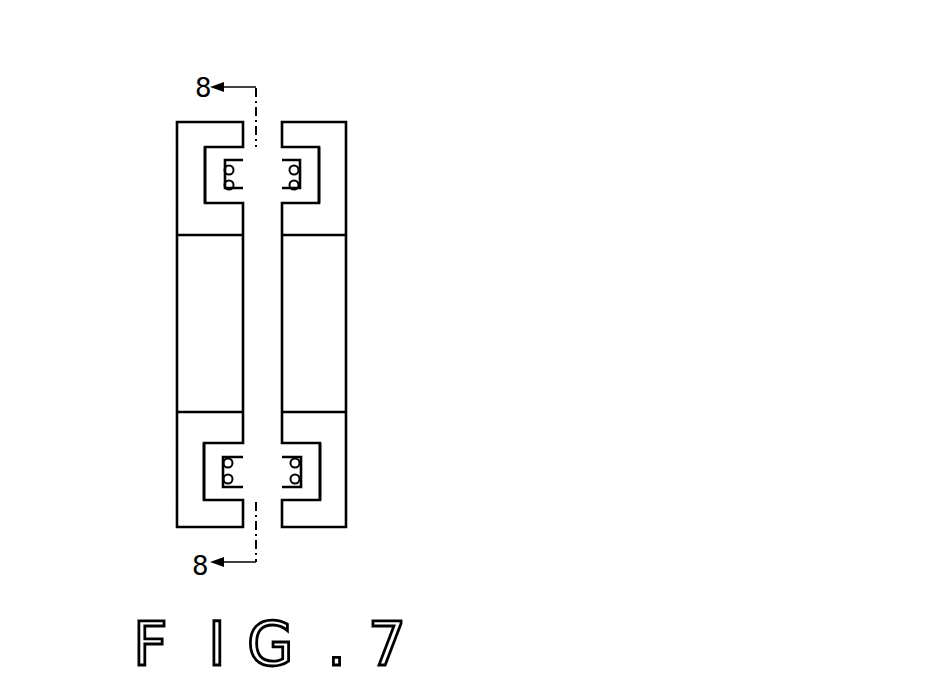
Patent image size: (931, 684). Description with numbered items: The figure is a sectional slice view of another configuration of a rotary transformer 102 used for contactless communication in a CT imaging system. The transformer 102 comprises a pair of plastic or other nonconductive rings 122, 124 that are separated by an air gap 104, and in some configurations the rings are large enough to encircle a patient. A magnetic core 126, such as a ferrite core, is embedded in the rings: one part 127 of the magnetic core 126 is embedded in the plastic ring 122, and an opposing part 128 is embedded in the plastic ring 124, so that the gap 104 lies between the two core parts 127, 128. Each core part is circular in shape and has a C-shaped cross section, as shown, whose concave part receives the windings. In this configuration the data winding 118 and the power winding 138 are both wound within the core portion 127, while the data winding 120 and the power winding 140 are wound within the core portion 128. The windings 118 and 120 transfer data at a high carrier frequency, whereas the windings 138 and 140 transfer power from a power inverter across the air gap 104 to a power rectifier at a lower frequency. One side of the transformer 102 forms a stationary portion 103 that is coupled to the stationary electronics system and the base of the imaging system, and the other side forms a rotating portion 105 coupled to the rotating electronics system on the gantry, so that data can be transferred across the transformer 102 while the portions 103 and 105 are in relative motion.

The rotary transformer 102 is at (478, 86).
The stationary portion 103 is at (352, 157).
The gap 104 is at (268, 130).
The rotating portion 105 is at (173, 164).
The conductive winding 118 is at (225, 163).
The conductive winding 120 is at (300, 171).
The plastic ring 122 is at (181, 122).
The plastic ring 124 is at (329, 118).
The magnetic core 126 is at (229, 434).
The magnetic core part 127 is at (216, 205).
The magnetic core part 128 is at (320, 203).
The power winding 138 is at (228, 184).
The power winding 140 is at (300, 186).